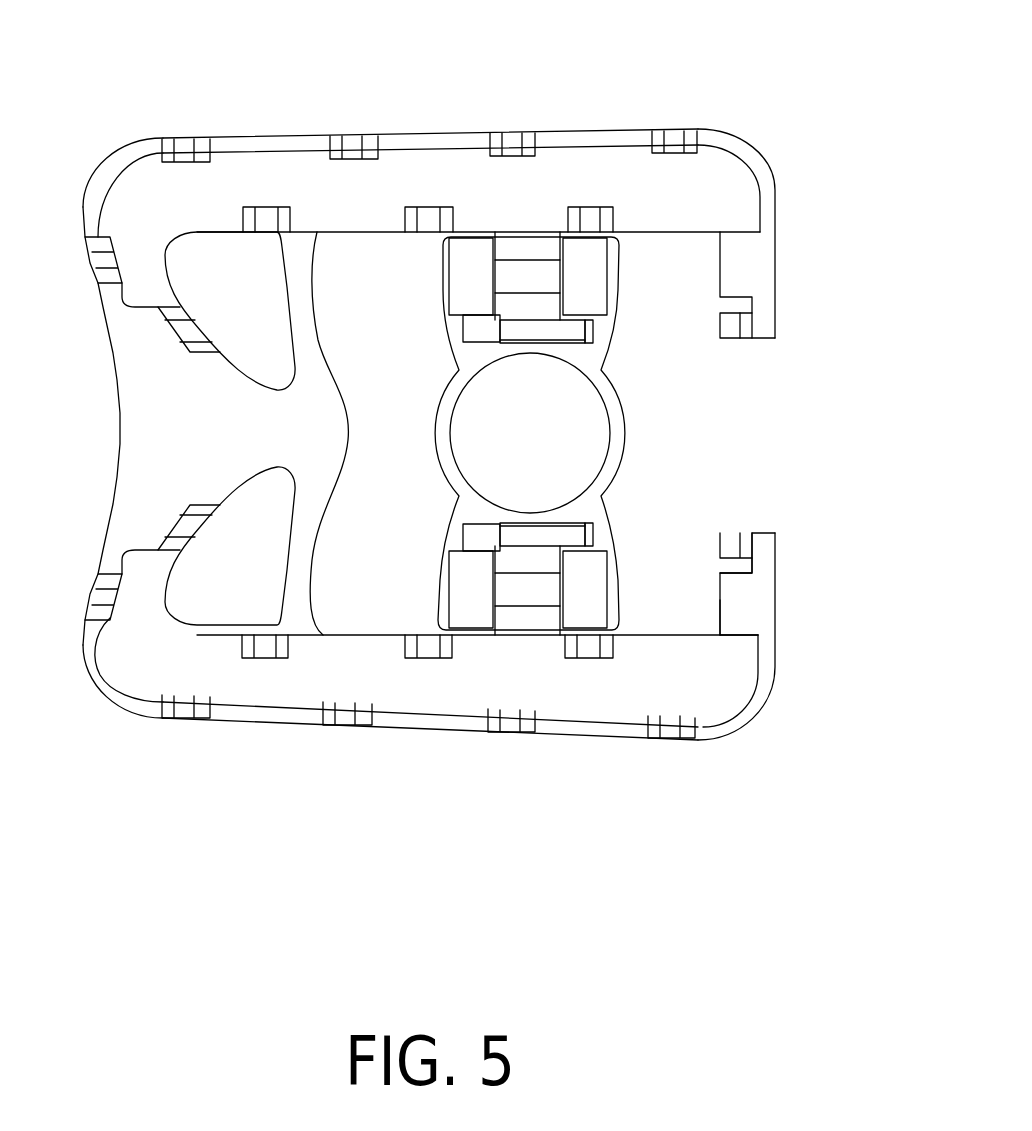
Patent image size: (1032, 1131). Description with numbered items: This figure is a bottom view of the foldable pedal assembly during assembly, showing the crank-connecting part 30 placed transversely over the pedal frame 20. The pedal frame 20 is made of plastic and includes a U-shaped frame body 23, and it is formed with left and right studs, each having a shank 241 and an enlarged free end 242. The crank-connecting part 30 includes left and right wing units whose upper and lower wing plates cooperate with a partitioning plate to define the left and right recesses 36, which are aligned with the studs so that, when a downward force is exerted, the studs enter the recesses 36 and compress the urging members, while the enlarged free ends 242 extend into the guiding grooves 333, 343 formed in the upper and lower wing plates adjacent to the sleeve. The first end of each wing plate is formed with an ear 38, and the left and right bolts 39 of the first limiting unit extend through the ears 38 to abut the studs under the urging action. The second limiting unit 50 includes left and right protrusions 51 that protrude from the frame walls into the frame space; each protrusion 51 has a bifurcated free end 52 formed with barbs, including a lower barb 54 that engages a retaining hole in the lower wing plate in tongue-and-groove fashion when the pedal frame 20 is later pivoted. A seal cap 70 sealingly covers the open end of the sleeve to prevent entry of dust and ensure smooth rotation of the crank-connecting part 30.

The pedal frame 20 is at (380, 124).
The U-shaped frame body 23 is at (262, 137).
The crank-connecting part 30 is at (629, 272).
The left and right recesses 36 is at (487, 338).
The ear 38 is at (465, 250).
The left and right bolts 39 is at (535, 272).
The shank 241 is at (506, 247).
The enlarged free end 242 is at (568, 333).
The guiding groove 333 is at (462, 323).
The guiding groove 343 is at (596, 332).
The second limiting unit 50 is at (774, 262).
The left and right protrusions 51 is at (765, 627).
The bifurcated free end 52 is at (763, 548).
The lower barb 54 is at (733, 330).
The seal cap 70 is at (590, 453).